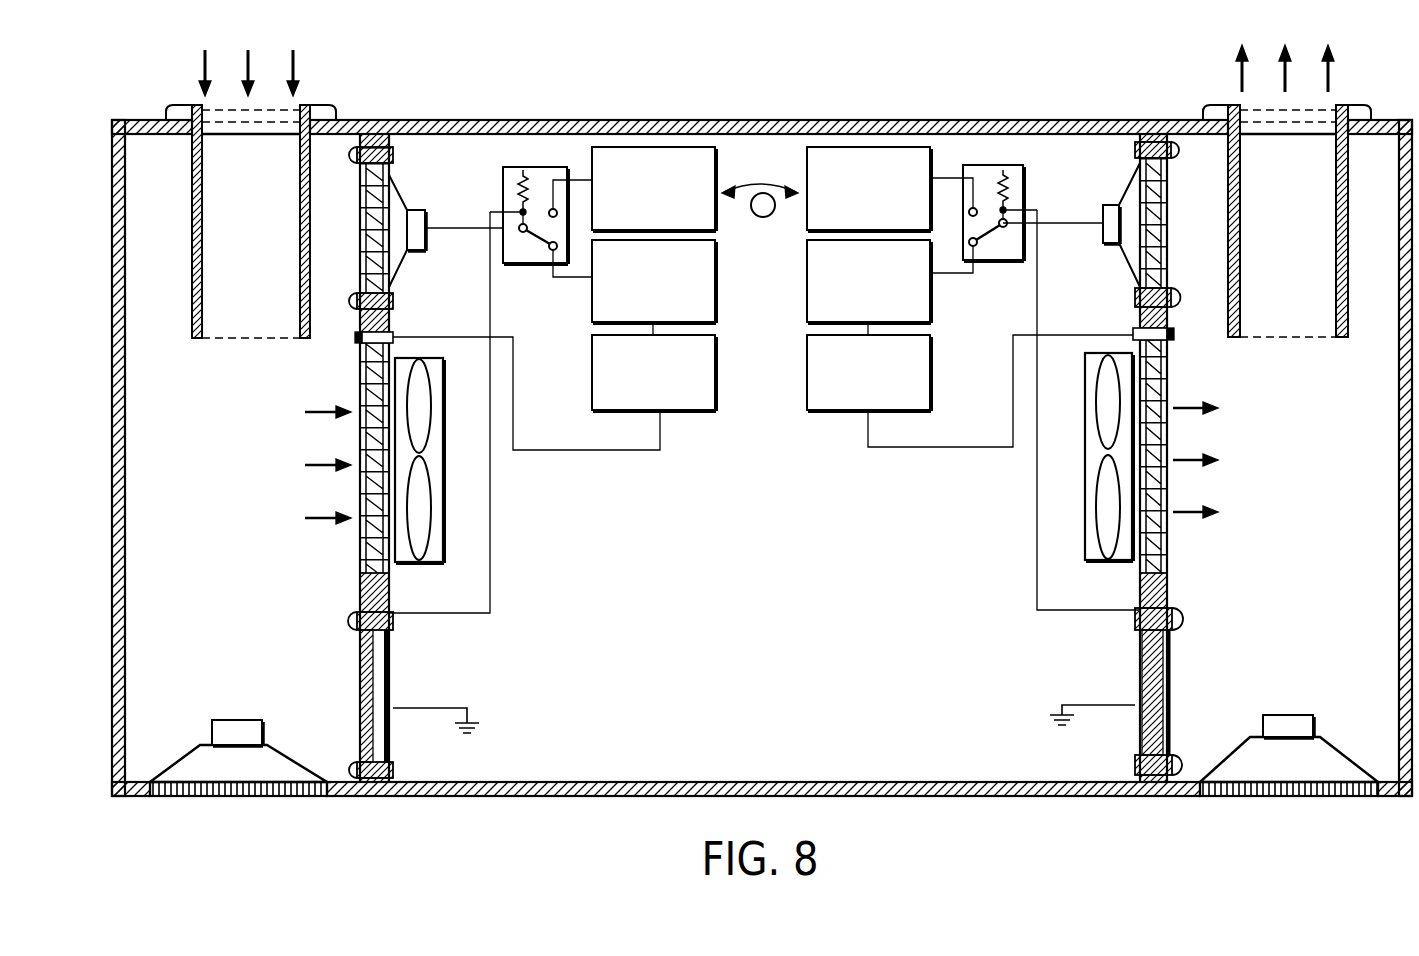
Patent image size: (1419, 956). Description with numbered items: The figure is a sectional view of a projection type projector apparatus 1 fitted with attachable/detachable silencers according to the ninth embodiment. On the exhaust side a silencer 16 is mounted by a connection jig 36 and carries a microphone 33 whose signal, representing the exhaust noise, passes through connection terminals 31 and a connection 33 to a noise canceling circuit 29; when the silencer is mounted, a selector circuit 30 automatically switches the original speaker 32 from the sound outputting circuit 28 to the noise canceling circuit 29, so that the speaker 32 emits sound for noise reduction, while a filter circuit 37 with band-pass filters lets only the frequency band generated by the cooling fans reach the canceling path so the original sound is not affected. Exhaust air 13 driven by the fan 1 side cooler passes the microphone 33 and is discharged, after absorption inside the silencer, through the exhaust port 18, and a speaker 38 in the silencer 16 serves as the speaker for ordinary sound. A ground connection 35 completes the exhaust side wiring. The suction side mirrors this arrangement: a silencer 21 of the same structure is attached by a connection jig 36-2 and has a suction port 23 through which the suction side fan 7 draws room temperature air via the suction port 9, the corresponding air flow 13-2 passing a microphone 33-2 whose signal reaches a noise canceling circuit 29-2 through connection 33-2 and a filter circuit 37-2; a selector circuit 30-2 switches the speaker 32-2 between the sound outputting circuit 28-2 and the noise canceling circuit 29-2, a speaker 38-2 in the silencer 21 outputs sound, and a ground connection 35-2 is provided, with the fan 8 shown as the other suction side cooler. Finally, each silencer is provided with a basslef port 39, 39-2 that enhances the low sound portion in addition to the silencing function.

The projection type projector apparatus 1 is at (1085, 393).
The fan 7 is at (443, 384).
The fan 8 is at (1135, 562).
The suction port 9 is at (395, 563).
The exhaust air 13 is at (1190, 413).
The intake air flow 13-2 is at (318, 415).
The silencer 16 is at (1403, 797).
The exhaust port 18 is at (1352, 125).
The silencer 21 is at (123, 797).
The suction port 23 is at (192, 135).
The sound outputting circuit 28 is at (914, 158).
The sound outputting circuit 28-2 is at (699, 160).
The noise canceling circuit 29 is at (930, 300).
The noise canceling circuit 29-2 is at (592, 302).
The selector circuit 30 is at (1023, 183).
The selector circuit 30-2 is at (503, 183).
The connection terminals 31 is at (1140, 323).
The speaker 32 is at (1103, 237).
The speaker 32-2 is at (416, 250).
The microphone 33 is at (1175, 336).
The microphone 33-2 is at (355, 338).
The ground connection 35 is at (1133, 753).
The ground connection 35-2 is at (393, 753).
The connection jig 36 is at (1172, 677).
The air duct 36-2 is at (358, 683).
The filter circuit 37 is at (822, 410).
The filter circuit 37-2 is at (700, 410).
The speaker 38 is at (1290, 715).
The speaker 38-2 is at (237, 720).
The basslef port 39 is at (1347, 103).
The basslef port 39-2 is at (186, 104).